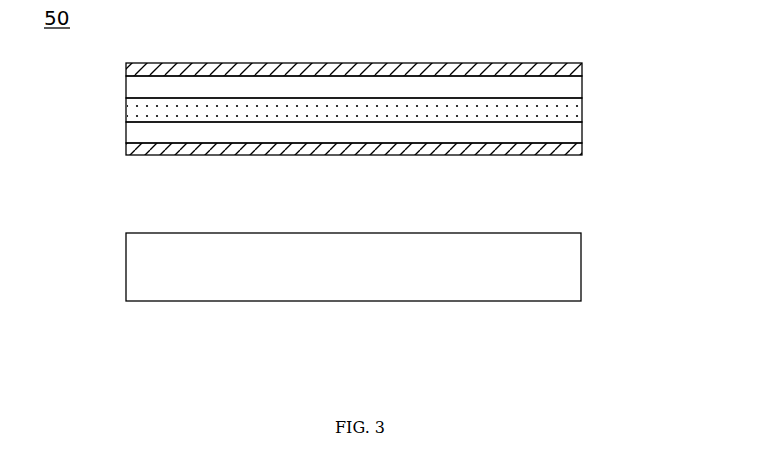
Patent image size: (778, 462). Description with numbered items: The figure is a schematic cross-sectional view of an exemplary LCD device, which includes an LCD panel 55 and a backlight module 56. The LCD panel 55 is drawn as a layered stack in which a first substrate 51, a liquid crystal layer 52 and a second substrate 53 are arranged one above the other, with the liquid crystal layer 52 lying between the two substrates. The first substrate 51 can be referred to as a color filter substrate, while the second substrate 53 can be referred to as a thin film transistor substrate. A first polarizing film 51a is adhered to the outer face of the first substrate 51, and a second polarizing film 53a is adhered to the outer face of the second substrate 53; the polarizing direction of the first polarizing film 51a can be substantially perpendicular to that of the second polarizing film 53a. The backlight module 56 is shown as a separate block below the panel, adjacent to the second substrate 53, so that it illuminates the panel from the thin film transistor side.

The first polarizing film 51a is at (582, 67).
The first substrate 51 is at (582, 85).
The liquid crystal layer 52 is at (582, 110).
The second substrate 53 is at (582, 131).
The second polarizing film 53a is at (582, 150).
The LCD panel 55 is at (650, 80).
The backlight module 56 is at (582, 262).